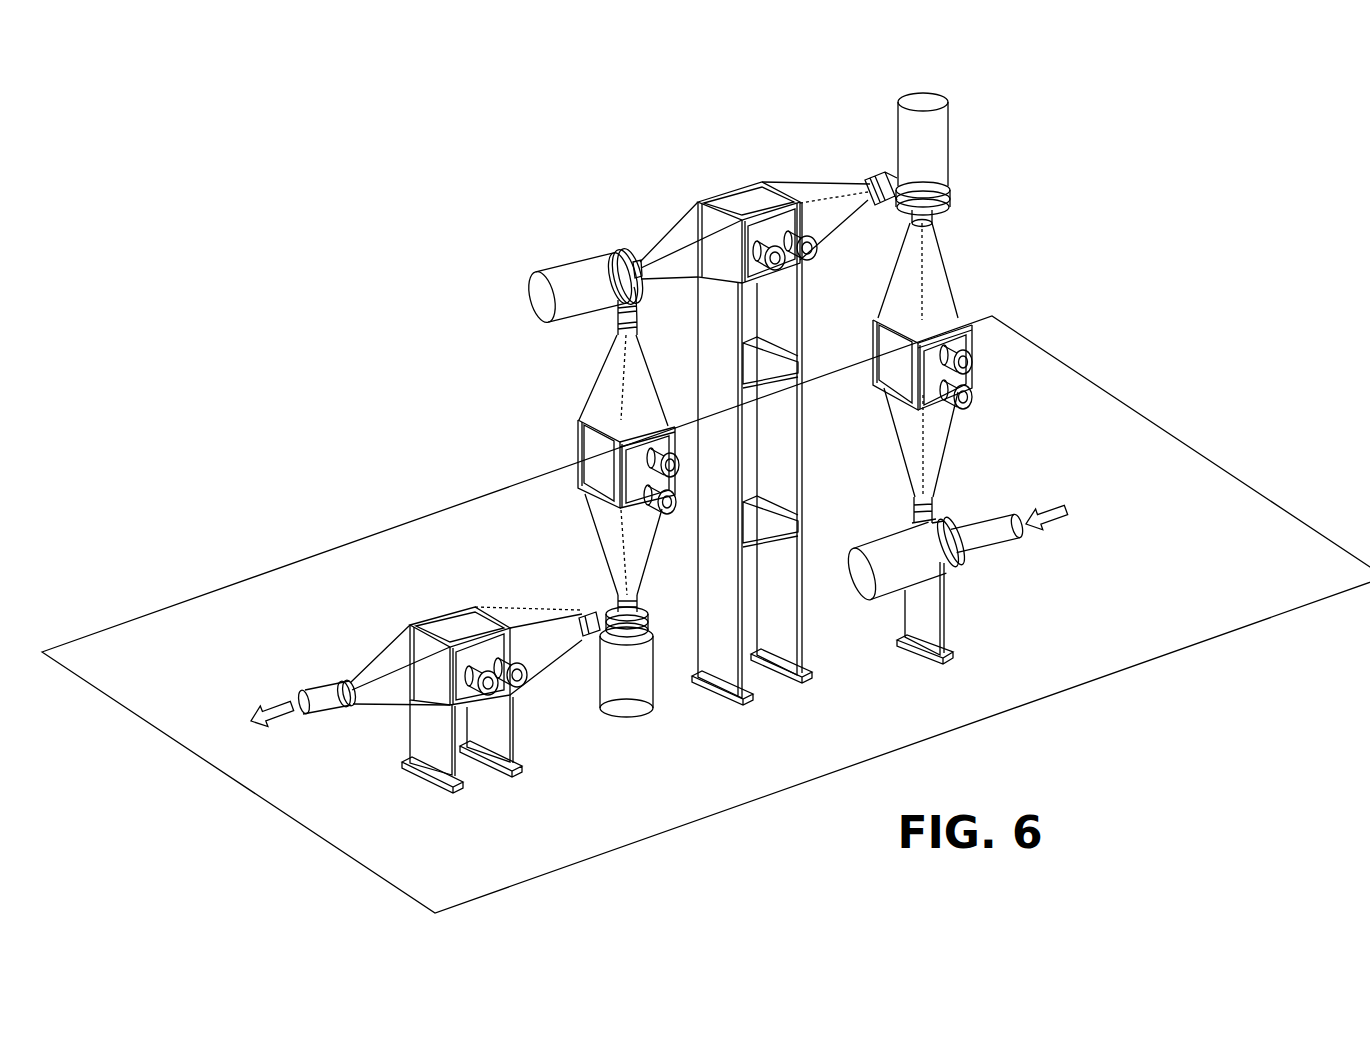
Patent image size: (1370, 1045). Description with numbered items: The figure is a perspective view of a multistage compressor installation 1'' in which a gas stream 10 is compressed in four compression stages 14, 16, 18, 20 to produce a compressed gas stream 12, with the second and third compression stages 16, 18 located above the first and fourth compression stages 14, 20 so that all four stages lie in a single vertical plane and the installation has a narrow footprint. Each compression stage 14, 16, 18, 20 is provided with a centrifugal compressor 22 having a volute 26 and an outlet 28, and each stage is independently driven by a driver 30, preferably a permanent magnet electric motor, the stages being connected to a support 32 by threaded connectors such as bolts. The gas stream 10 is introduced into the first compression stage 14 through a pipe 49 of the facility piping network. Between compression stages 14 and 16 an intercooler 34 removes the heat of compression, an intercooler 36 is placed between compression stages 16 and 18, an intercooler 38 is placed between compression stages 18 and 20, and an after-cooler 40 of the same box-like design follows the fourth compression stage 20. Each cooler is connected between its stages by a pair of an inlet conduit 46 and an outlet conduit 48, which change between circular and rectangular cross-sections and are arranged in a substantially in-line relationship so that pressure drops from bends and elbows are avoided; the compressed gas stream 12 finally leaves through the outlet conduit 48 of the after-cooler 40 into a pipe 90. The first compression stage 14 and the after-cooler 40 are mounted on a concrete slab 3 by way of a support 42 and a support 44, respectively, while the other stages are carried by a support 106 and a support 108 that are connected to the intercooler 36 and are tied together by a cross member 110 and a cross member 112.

The multistage compressor installation 1'' is at (1158, 131).
The concrete slab 3 is at (1212, 495).
The gas stream 10 is at (1055, 510).
The compressed gas stream 12 is at (281, 706).
The first compression stage 14 is at (966, 470).
The second compression stage 16 is at (1027, 117).
The third compression stage 18 is at (518, 330).
The fourth compression stage 20 is at (631, 730).
The centrifugal compressor 22 is at (620, 250).
The volute 26 is at (636, 285).
The outlet 28 is at (638, 318).
The driver 30 is at (568, 273).
The support 32 is at (932, 622).
The intercooler 34 is at (994, 352).
The intercooler 36 is at (741, 186).
The intercooler 38 is at (572, 491).
The after-cooler 40 is at (450, 600).
The support 42 is at (500, 738).
The support 44 is at (446, 753).
The inlet conduit 46 is at (820, 181).
The outlet conduit 48 is at (667, 202).
The pipe 49 is at (1010, 540).
The pipe 90 is at (320, 694).
The support 106 is at (735, 668).
The support 108 is at (798, 632).
The cross member 110 is at (763, 521).
The cross member 112 is at (765, 365).